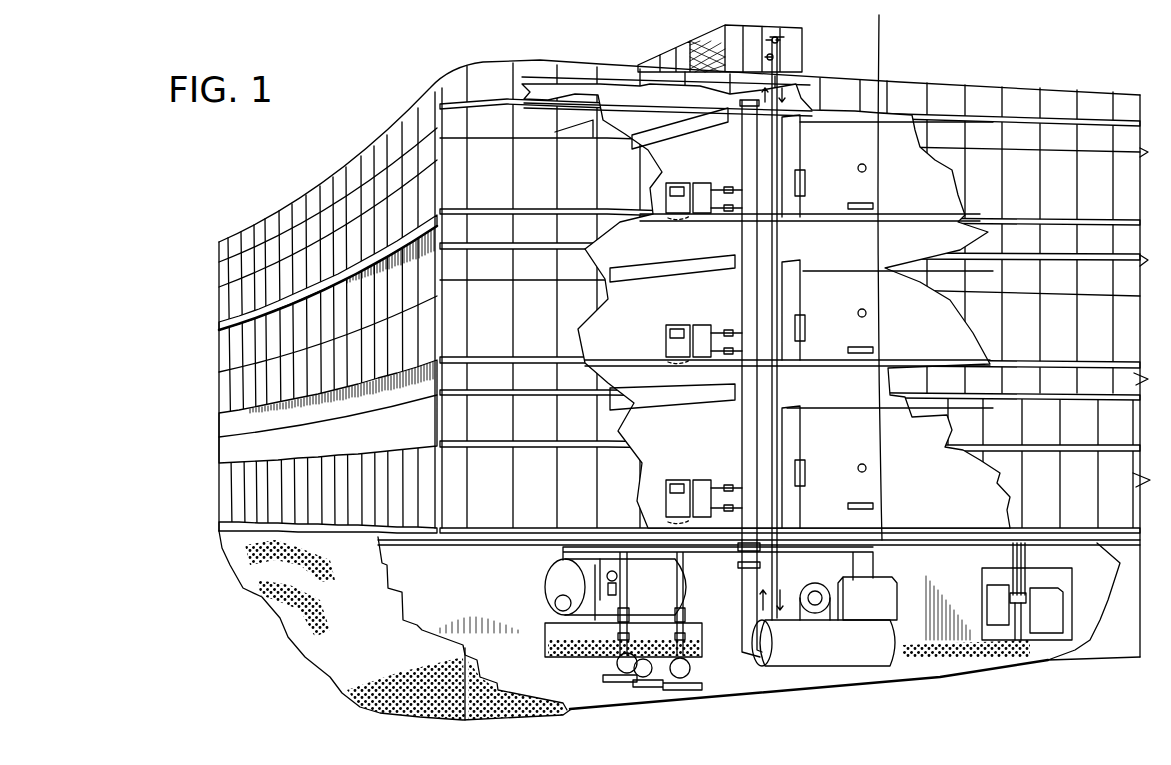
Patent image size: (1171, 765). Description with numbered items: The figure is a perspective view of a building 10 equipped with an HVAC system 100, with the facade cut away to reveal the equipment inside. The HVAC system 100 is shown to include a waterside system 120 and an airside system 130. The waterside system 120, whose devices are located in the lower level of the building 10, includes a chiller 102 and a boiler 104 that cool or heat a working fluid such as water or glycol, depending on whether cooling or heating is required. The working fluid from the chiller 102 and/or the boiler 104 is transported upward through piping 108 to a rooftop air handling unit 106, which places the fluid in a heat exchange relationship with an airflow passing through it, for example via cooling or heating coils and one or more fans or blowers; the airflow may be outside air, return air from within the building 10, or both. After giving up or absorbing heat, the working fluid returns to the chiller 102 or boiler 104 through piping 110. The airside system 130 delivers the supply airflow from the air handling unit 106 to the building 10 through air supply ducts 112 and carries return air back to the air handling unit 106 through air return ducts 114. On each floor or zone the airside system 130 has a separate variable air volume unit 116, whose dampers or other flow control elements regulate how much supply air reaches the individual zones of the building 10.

The building 10 is at (342, 102).
The HVAC system 100 is at (573, 716).
The chiller 102 is at (841, 643).
The boiler 104 is at (553, 585).
The rooftop air handling unit 106 is at (797, 63).
The piping 108 is at (752, 66).
The piping 110 is at (779, 47).
The air supply ducts 112 is at (742, 122).
The air return ducts 114 is at (668, 218).
The variable air volume units 116 is at (707, 192).
The waterside system 120 is at (916, 605).
The airside system 130 is at (888, 282).